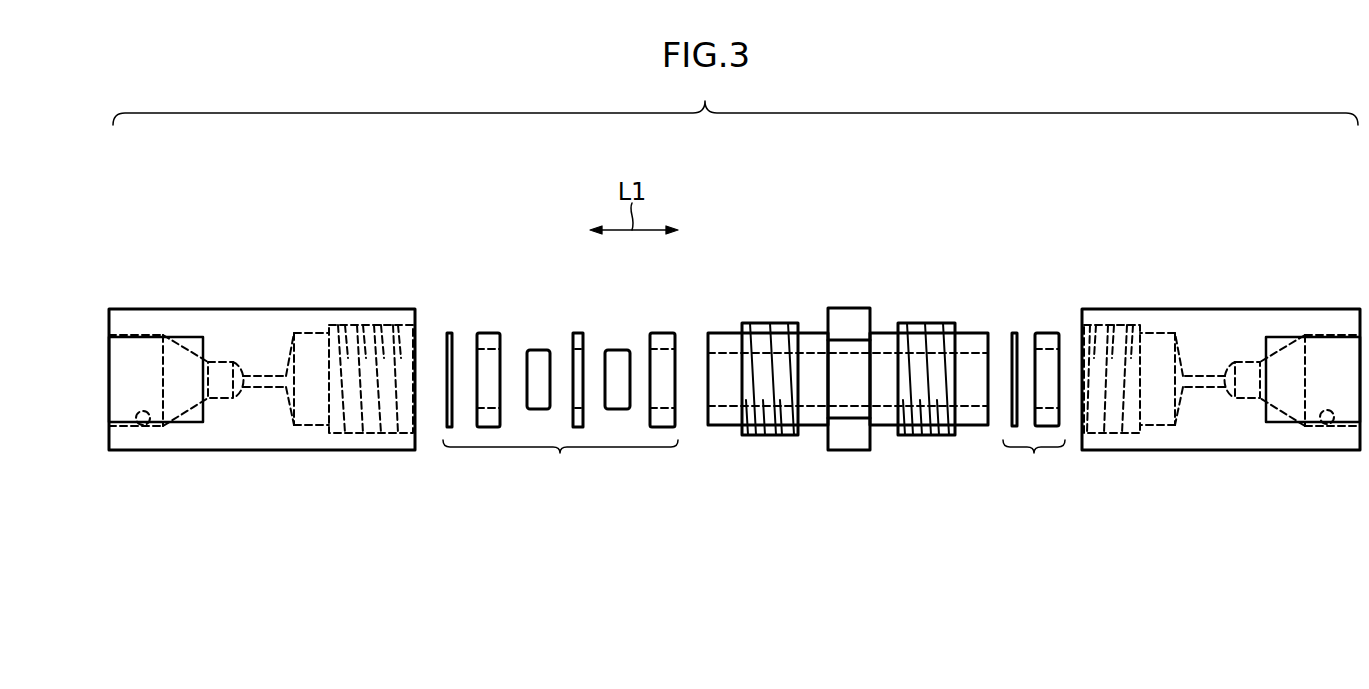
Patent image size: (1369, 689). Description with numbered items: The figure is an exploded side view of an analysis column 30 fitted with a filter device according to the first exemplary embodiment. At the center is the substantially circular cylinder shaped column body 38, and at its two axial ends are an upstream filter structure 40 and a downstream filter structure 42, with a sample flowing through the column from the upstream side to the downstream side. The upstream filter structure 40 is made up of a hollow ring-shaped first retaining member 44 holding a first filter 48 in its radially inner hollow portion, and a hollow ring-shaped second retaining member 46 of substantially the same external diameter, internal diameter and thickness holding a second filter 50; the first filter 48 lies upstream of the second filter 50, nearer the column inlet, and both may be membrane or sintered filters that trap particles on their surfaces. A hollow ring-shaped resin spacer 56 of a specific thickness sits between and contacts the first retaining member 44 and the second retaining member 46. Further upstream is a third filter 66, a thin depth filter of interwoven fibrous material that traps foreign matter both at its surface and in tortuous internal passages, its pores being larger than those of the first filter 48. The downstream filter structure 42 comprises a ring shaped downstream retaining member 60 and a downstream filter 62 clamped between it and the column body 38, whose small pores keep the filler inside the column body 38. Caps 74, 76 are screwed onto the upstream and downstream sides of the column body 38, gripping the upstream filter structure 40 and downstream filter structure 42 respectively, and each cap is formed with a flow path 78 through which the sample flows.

The analysis column 30 is at (1022, 171).
The column body 38 is at (806, 466).
The upstream filter structure 40 is at (552, 382).
The downstream filter structure 42 is at (1026, 381).
The first retaining member 44 is at (491, 333).
The second retaining member 46 is at (662, 333).
The first filter 48 is at (538, 350).
The second filter 50 is at (617, 350).
The spacer 56 is at (578, 333).
The downstream retaining member 60 is at (1045, 333).
The downstream filter 62 is at (1014, 333).
The third filter 66 is at (449, 333).
The cap 74 is at (264, 466).
The cap 76 is at (1218, 469).
The flow path 78 is at (142, 425).